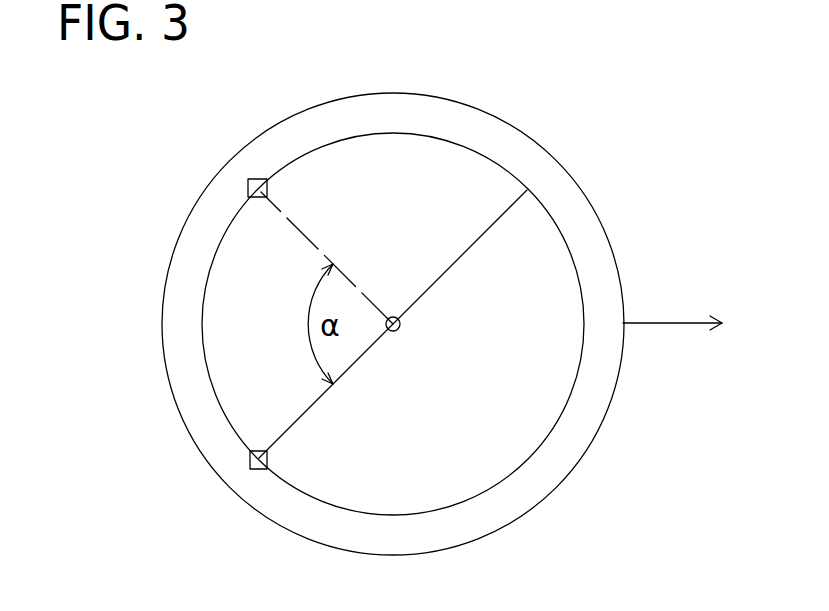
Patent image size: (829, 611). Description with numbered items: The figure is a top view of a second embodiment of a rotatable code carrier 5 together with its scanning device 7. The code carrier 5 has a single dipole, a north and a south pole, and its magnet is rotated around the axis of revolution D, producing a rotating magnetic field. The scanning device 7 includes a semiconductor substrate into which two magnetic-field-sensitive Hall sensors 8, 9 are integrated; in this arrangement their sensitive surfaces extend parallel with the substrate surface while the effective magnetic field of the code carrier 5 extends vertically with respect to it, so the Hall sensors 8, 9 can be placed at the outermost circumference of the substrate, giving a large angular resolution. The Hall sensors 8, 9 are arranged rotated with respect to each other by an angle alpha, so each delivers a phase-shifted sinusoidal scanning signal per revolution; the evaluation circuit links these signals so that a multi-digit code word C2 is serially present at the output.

The code carrier 5 is at (482, 183).
The scanning device 7 is at (533, 484).
The Hall sensor 8 is at (262, 190).
The Hall sensor 9 is at (257, 462).
The axis of revolution D is at (400, 330).
The multi-digit code word C2 is at (667, 323).